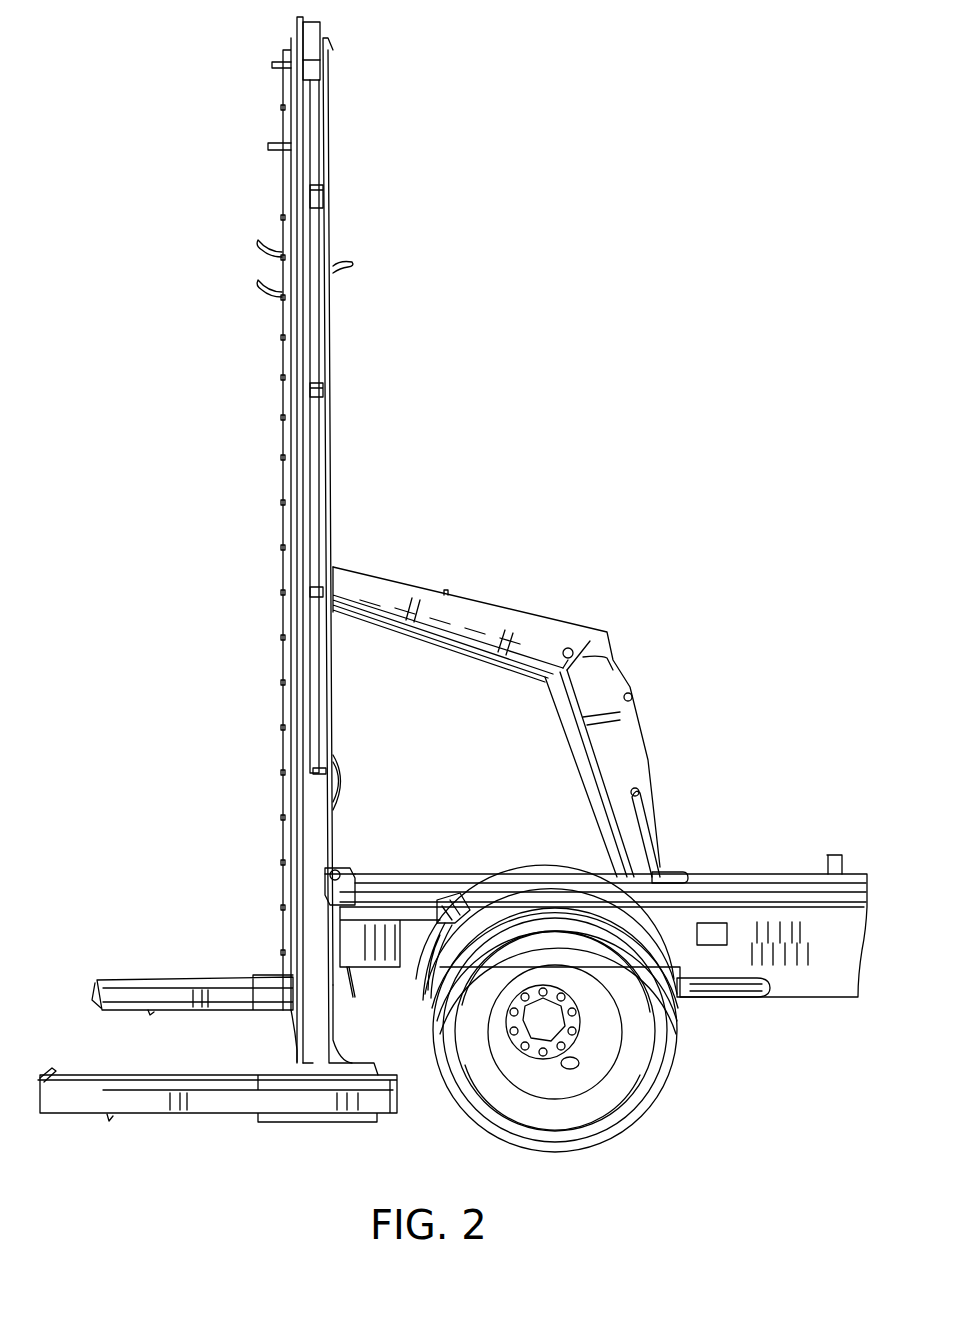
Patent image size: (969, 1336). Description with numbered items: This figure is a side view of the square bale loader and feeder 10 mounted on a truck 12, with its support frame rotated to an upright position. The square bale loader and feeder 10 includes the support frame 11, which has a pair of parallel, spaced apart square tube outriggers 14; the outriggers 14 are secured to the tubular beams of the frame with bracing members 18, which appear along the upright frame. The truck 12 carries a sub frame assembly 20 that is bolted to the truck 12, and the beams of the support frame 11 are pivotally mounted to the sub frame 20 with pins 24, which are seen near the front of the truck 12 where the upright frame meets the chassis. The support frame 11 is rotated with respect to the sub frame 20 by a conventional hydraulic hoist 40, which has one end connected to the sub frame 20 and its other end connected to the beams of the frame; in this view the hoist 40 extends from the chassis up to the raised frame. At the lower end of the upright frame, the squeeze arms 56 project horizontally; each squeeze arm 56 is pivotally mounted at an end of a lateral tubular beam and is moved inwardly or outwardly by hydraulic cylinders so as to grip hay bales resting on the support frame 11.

The square bale loader and feeder 10 is at (480, 527).
The support frame 11 is at (279, 345).
The truck 12 is at (688, 1037).
The square tube outriggers 14 is at (331, 94).
The bracing members 18 is at (320, 195).
The sub frame assembly 20 is at (820, 953).
The pins 24 is at (341, 868).
The hydraulic hoist 40 is at (540, 643).
The squeeze arm 56 is at (131, 982).